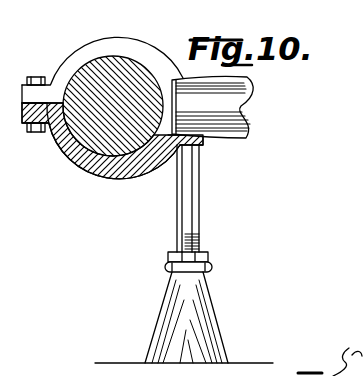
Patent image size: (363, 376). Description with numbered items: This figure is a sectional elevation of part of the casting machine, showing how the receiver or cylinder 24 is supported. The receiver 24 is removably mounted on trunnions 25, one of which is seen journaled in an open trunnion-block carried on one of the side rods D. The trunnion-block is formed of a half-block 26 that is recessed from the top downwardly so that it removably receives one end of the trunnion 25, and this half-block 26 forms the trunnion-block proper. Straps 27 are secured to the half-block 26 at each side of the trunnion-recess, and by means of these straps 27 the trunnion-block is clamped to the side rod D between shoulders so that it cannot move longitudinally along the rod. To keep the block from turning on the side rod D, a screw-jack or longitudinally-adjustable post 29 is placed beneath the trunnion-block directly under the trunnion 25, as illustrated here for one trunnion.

The receiver or cylinder 24 is at (252, 99).
The trunnion 25 is at (202, 112).
The half-block 26 is at (76, 173).
The strap 27 is at (102, 107).
The screw-jack or longitudinally-adjustable post 29 is at (176, 221).
The side rod D is at (138, 63).